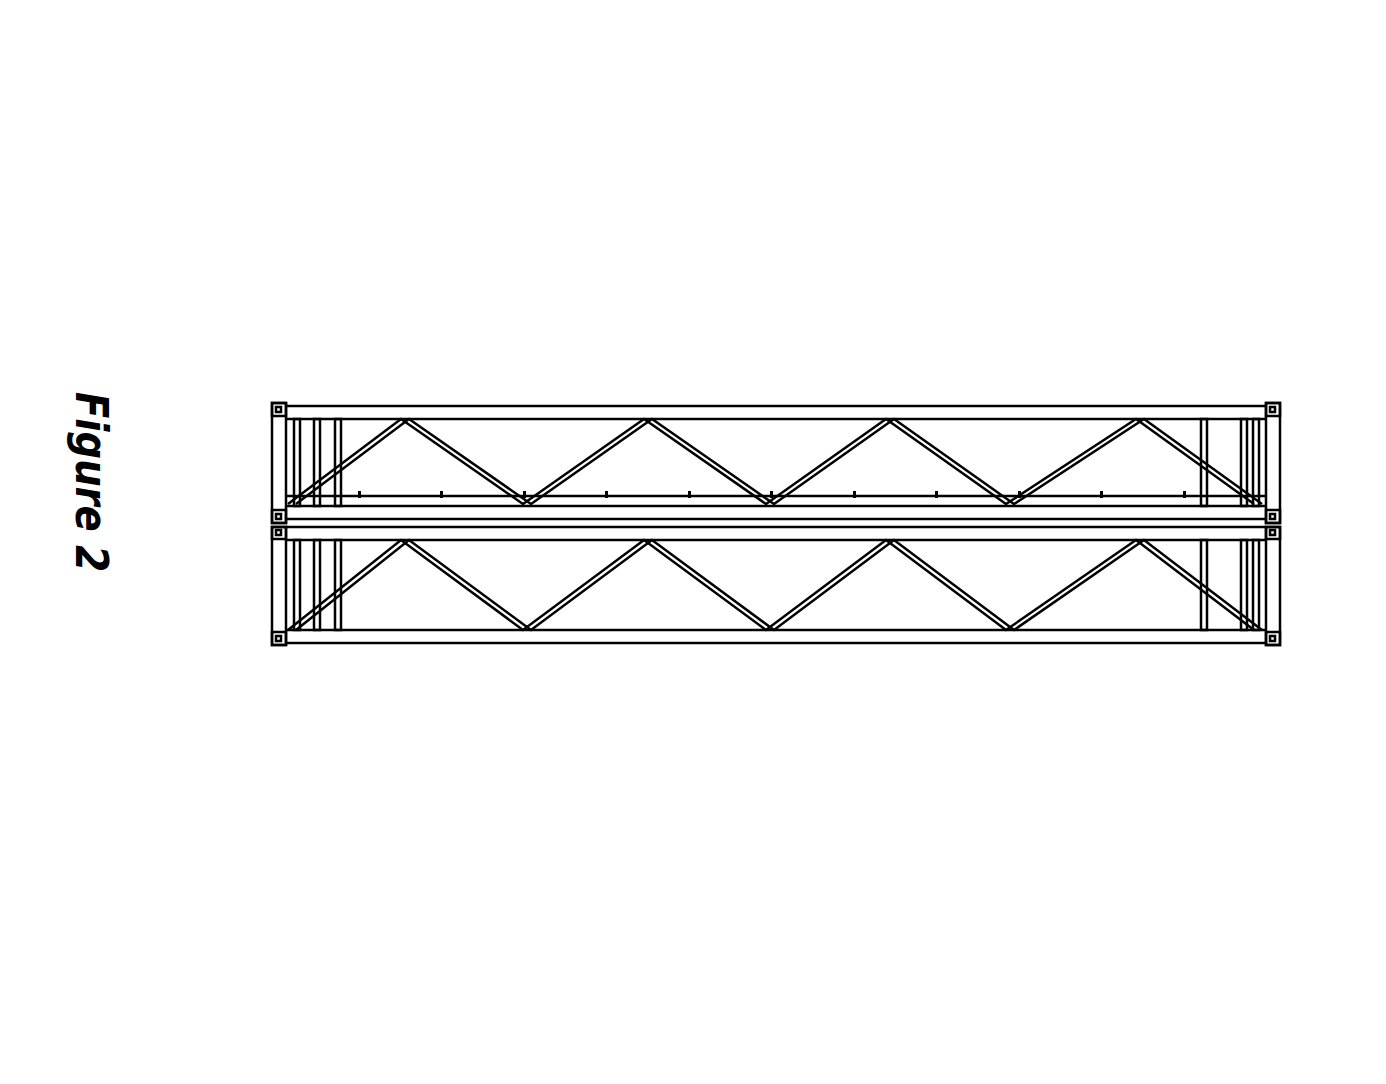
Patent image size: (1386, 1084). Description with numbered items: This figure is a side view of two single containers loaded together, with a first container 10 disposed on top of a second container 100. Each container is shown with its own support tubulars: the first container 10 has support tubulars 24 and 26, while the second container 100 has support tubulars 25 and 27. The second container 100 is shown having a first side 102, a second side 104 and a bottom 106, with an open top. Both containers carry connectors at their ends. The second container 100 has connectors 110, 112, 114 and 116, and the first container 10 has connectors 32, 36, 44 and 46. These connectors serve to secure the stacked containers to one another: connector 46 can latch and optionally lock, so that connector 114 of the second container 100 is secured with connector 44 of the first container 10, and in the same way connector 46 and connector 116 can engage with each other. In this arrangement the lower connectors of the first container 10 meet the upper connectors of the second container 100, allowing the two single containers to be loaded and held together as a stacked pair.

The first container 10 is at (902, 342).
The support tubular 24 is at (345, 432).
The support tubular 26 is at (1193, 420).
The connector 32 is at (274, 404).
The connector 36 is at (1272, 403).
The connector 44 is at (270, 517).
The connector 46 is at (1279, 513).
The second container 100 is at (732, 657).
The first side 102 is at (273, 582).
The second side 104 is at (1279, 575).
The bottom 106 is at (562, 640).
The connector 110 is at (273, 645).
The connector 112 is at (1277, 643).
The connector 114 is at (272, 533).
The connector 116 is at (1279, 535).
The support tubular 25 is at (338, 632).
The support tubular 27 is at (1200, 630).